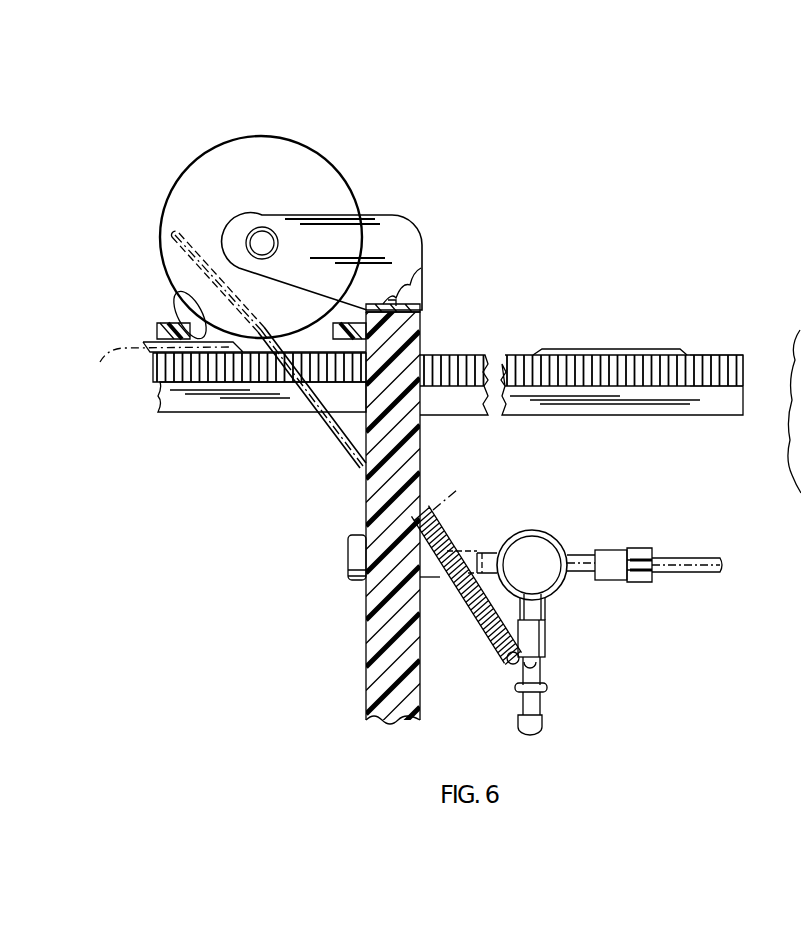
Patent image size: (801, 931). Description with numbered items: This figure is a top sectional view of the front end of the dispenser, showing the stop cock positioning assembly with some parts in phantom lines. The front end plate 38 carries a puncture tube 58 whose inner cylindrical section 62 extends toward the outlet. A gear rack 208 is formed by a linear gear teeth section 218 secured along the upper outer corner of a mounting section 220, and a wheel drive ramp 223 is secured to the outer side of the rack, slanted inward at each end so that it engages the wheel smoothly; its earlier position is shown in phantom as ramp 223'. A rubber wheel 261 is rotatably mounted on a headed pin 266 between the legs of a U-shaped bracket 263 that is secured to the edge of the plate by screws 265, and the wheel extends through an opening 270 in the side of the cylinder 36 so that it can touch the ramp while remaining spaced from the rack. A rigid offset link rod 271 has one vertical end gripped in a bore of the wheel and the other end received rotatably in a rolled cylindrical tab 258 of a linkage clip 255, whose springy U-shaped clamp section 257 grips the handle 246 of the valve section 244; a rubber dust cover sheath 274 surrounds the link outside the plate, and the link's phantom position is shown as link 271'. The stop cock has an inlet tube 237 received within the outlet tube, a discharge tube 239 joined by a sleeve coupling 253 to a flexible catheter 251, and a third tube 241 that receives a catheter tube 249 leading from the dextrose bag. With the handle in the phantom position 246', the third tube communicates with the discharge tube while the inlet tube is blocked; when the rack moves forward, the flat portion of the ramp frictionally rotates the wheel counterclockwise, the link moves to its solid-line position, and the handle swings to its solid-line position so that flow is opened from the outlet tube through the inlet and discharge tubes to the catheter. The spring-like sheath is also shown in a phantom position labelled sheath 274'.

The wheel 261 is at (285, 152).
The headed pin 266 is at (252, 238).
The U-shaped bracket 263 is at (397, 240).
The screws 265 is at (420, 277).
The opening 270 is at (180, 297).
The cylinder 36 is at (157, 327).
The wheel drive ramp phantom position 223' is at (228, 377).
The link rod 271 is at (306, 397).
The link rod phantom position 271' is at (182, 266).
The front end plate 38 is at (373, 685).
The gear rack 208 is at (667, 430).
The wheel drive ramp 223 is at (610, 330).
The linear gear teeth section 218 is at (728, 373).
The mounting section 220 is at (568, 407).
The inner cylindrical section 62 is at (358, 552).
The puncture tube 58 is at (342, 585).
The rubber dust cover sheath 274 is at (467, 587).
The spring alternate position 274' is at (457, 487).
The handle phantom position 246' is at (484, 532).
The inlet tube 237 is at (515, 532).
The valve section 244 is at (540, 573).
The discharge tube 239 is at (587, 553).
The sleeve coupling 253 is at (638, 558).
The flexible plastic catheter 251 is at (713, 565).
The linkage clip 255 is at (556, 689).
The U-shaped clamp section 257 is at (532, 640).
The rolled cylindrical tab 258 is at (510, 663).
The handle 246 is at (571, 684).
The third tube 241 is at (547, 690).
The flexible plastic catheter tube 249 is at (520, 717).